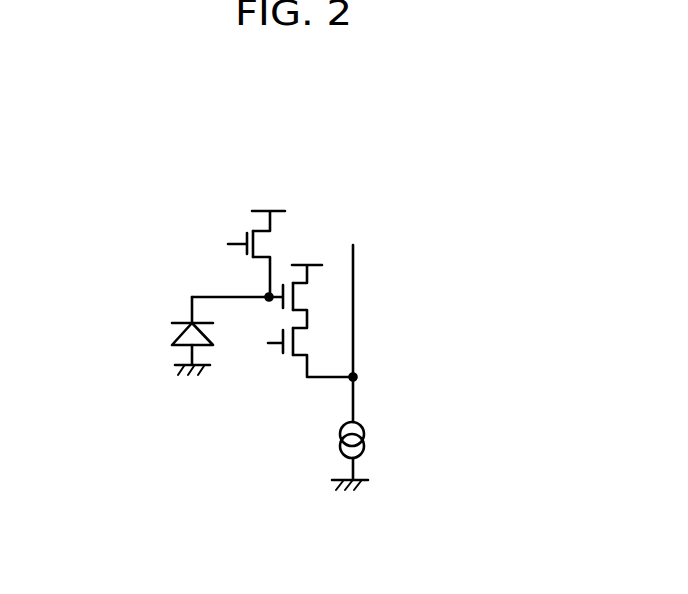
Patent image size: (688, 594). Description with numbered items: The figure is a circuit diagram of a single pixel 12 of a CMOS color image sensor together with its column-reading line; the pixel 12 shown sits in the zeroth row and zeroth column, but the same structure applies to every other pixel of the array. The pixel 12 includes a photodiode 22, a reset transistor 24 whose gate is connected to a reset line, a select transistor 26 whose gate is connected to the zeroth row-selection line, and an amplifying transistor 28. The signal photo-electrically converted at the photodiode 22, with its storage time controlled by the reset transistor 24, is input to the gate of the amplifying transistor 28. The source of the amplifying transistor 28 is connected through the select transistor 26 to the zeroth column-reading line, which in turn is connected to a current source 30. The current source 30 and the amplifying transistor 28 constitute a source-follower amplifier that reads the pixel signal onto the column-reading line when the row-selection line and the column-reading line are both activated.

The pixel 12 is at (433, 171).
The photodiode 22 is at (163, 330).
The reset transistor 24 is at (250, 216).
The select transistor 26 is at (315, 340).
The amplifying transistor 28 is at (315, 295).
The current source 30 is at (333, 442).